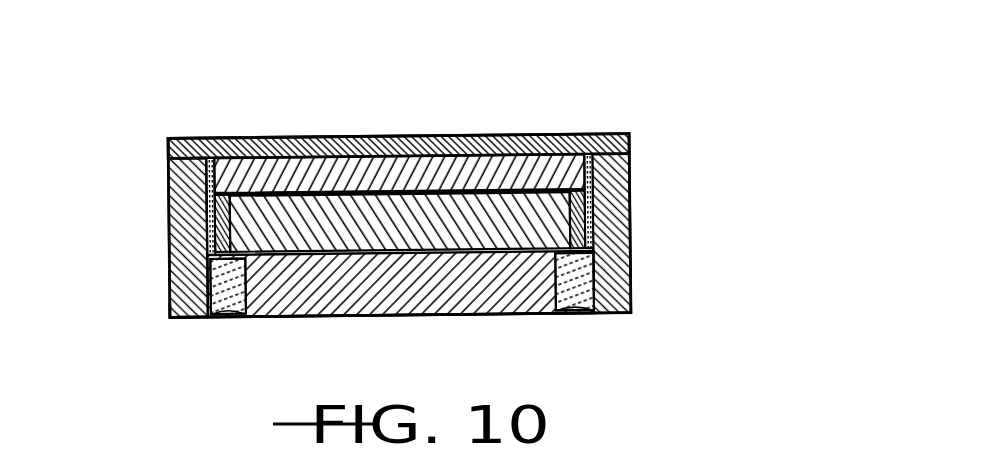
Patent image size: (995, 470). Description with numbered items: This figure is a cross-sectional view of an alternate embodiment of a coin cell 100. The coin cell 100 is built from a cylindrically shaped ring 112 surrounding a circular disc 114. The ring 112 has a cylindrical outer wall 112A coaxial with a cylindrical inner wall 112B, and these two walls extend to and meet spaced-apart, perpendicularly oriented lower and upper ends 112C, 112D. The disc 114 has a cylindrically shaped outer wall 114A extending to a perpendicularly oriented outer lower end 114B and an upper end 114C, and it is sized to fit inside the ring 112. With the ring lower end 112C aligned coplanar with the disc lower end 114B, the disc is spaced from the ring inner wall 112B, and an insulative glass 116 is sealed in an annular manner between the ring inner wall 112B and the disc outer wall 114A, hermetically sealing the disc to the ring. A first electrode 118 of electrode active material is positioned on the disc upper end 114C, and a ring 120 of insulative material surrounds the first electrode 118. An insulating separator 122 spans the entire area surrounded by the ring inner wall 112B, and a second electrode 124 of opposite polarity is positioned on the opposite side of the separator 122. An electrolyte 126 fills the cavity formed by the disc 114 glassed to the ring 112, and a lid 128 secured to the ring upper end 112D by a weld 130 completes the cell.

The coin cell 100 is at (680, 108).
The ring 112 is at (632, 268).
The cylindrical outer wall 112A is at (168, 267).
The cylindrical inner wall 112B is at (215, 318).
The lower end 112C is at (185, 318).
The upper end 112D is at (193, 139).
The circular disc 114 is at (482, 315).
The outer wall 114A is at (233, 318).
The outer lower end 114B is at (408, 315).
The upper end 114C is at (209, 213).
The insulative glass 116 is at (577, 317).
The first electrode 118 is at (548, 227).
The ring of insulative material 120 is at (585, 193).
The insulating separator 122 is at (440, 190).
The second electrode 124 is at (377, 175).
The electrolyte 126 is at (243, 150).
The lid 128 is at (312, 140).
The weld 130 is at (632, 151).